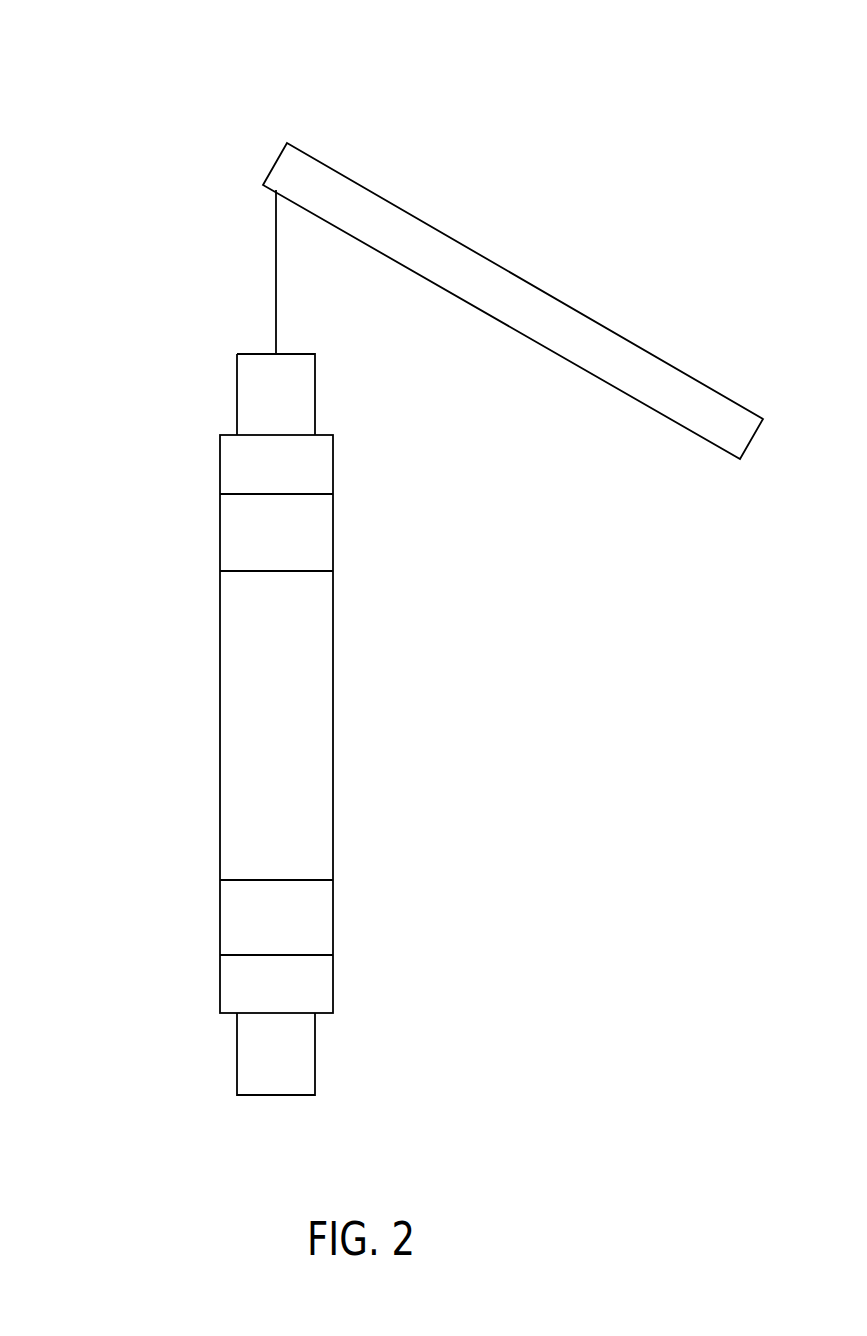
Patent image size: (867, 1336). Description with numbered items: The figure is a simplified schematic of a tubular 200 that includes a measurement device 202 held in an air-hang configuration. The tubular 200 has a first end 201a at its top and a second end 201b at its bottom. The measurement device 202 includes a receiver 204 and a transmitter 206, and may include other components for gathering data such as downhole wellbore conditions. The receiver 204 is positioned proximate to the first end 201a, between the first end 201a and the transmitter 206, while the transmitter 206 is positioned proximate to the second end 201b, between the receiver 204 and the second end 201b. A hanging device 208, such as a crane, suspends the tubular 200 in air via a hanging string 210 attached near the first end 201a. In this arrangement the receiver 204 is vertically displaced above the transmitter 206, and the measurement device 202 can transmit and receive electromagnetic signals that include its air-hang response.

The tubular 200 is at (132, 99).
The first end 201a is at (248, 392).
The second end 201b is at (250, 1062).
The measurement device 202 is at (240, 719).
The receiver 204 is at (240, 529).
The transmitter 206 is at (240, 926).
The hanging device 208 is at (510, 270).
The hanging string 210 is at (275, 269).